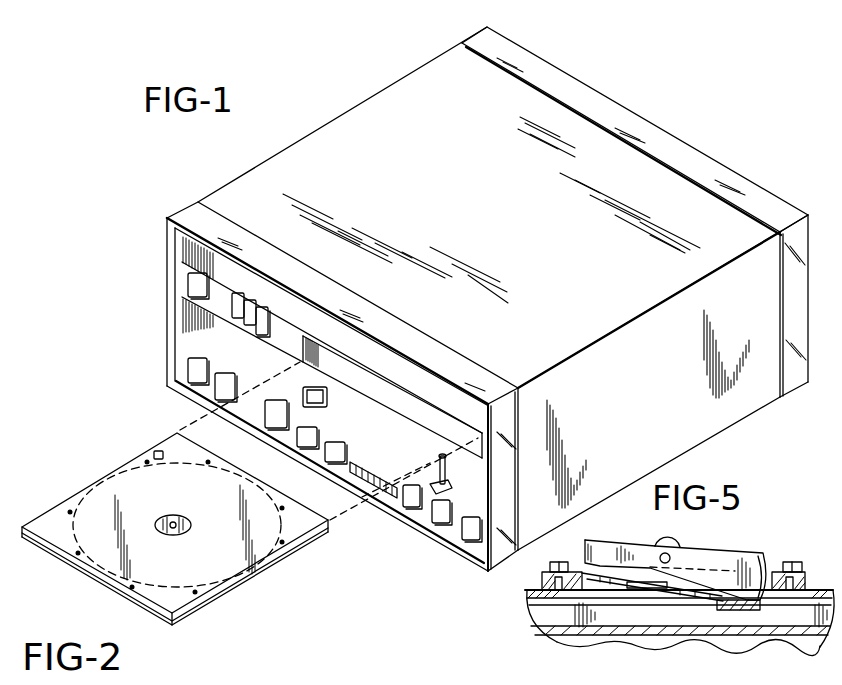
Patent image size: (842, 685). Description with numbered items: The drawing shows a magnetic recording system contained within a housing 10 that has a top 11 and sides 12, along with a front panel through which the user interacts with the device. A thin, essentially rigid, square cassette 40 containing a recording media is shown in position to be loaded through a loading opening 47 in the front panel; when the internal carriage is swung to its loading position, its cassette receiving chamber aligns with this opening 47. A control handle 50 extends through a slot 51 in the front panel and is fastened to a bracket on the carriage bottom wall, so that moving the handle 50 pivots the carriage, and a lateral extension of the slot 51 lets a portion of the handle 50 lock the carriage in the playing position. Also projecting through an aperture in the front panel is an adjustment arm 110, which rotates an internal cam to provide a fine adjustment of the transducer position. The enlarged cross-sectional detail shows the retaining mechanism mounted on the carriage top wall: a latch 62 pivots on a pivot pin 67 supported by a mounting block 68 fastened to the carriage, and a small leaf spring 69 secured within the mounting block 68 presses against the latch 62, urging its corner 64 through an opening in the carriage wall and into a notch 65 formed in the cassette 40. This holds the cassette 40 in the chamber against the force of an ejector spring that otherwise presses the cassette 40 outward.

In FIG. 1, the housing 10 is at (230, 177).
In FIG. 1, the top 11 is at (422, 178).
In FIG. 1, the sides 12 is at (642, 413).
In FIG. 1, the loading opening 47 is at (377, 383).
In FIG. 1, the adjustment arm 110 is at (302, 407).
In FIG. 1, the slot 51 is at (440, 458).
In FIG. 1, the control handle 50 is at (436, 490).
In FIG. 1, the cassette 40 is at (50, 522).
In FIG. 5, the cassette 40 is at (572, 618).
In FIG. 1, the notch 65 is at (158, 453).
In FIG. 5, the notch 65 is at (737, 602).
In FIG. 5, the pivot pin 67 is at (662, 547).
In FIG. 5, the latch 62 is at (705, 558).
In FIG. 5, the corner 64 is at (762, 598).
In FIG. 5, the mounting block 68 is at (542, 575).
In FIG. 5, the leaf spring 69 is at (590, 593).